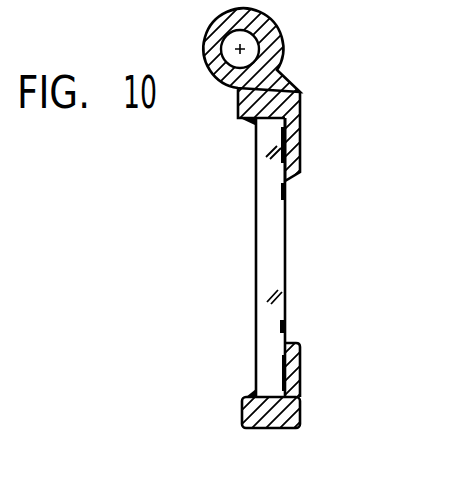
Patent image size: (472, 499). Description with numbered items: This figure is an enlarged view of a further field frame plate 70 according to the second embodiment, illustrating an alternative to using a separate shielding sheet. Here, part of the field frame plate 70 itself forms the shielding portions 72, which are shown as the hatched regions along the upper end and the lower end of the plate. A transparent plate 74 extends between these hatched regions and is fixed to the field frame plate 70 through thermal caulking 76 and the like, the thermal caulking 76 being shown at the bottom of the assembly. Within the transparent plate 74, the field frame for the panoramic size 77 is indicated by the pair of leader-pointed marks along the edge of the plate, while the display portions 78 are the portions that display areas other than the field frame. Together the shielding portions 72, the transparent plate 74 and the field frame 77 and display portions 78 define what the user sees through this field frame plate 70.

The field frame plate 70 is at (300, 98).
The shielding portions 72 is at (300, 165).
The transparent plate 74 is at (267, 258).
The thermal caulking 76 is at (248, 395).
The field frame for the panoramic size 77 is at (283, 325).
The display portions 78 is at (283, 162).